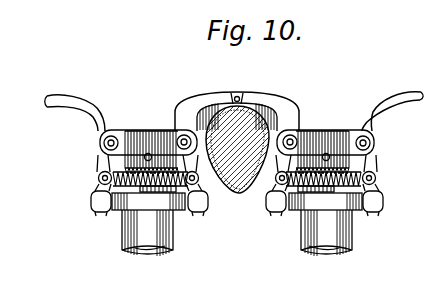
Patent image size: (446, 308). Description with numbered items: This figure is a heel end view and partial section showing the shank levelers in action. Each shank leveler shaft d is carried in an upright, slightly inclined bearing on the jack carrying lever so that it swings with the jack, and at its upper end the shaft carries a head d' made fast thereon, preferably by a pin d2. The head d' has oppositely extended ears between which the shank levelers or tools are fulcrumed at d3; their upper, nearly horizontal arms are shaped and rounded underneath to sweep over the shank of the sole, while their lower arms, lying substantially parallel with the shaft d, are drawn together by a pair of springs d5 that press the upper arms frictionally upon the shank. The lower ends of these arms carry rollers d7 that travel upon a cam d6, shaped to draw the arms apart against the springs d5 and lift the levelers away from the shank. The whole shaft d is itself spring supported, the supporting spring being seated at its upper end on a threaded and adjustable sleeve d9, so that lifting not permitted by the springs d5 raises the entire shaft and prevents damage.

The shank leveler shaft d is at (237, 141).
The head d' is at (261, 135).
The pin d2 is at (378, 85).
The fulcrum d3 is at (393, 148).
The springs d5 is at (412, 190).
The cam d6 is at (300, 207).
The rollers d7 is at (267, 204).
The threaded and adjustable sleeve d9 is at (340, 198).